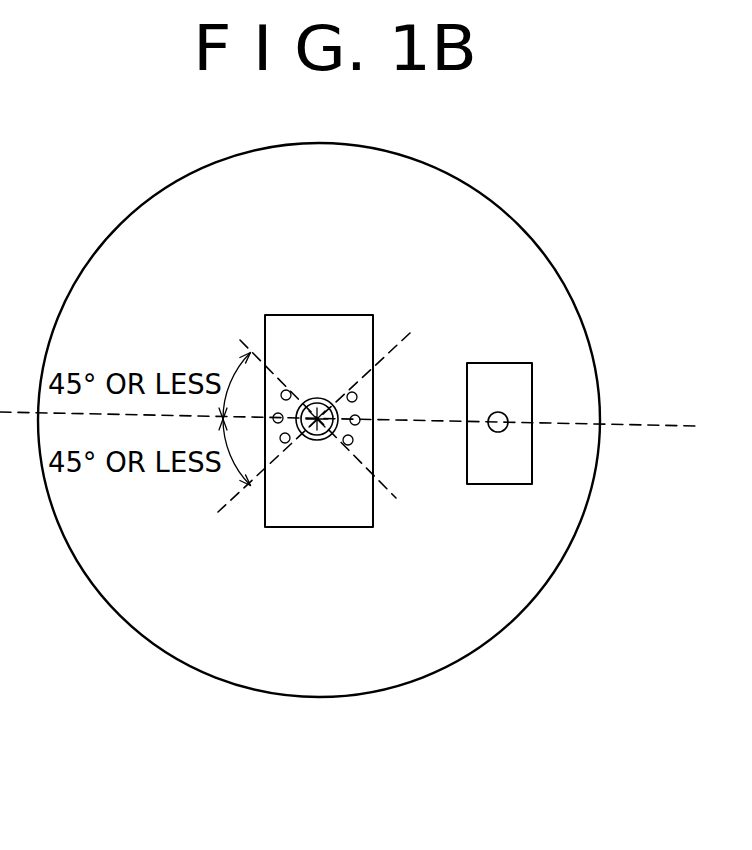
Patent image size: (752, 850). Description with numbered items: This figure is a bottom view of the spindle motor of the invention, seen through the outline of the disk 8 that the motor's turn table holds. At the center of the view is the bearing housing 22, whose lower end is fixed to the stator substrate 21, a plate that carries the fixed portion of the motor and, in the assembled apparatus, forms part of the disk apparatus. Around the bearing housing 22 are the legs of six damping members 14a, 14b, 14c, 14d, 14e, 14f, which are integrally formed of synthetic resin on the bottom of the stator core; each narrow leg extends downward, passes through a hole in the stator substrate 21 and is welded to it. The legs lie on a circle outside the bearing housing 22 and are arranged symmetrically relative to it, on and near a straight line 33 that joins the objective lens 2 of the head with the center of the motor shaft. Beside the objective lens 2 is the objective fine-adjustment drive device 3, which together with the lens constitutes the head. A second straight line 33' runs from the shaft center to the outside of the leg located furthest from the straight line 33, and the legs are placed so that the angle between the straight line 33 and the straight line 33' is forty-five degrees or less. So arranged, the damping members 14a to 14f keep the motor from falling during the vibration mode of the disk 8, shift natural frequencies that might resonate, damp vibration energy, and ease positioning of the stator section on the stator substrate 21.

The disk 8 is at (412, 173).
The straight line 33 is at (348, 393).
The straight line 33' is at (302, 394).
The stator substrate 21 is at (344, 328).
The bearing housing 22 is at (317, 441).
The damping member 14a is at (276, 412).
The damping member 14b is at (359, 415).
The damping member 14c is at (286, 389).
The damping member 14d is at (284, 444).
The damping member 14e is at (354, 391).
The damping member 14f is at (353, 444).
The objective lens 2 is at (505, 413).
The objective fine-adjustment drive device 3 is at (518, 468).